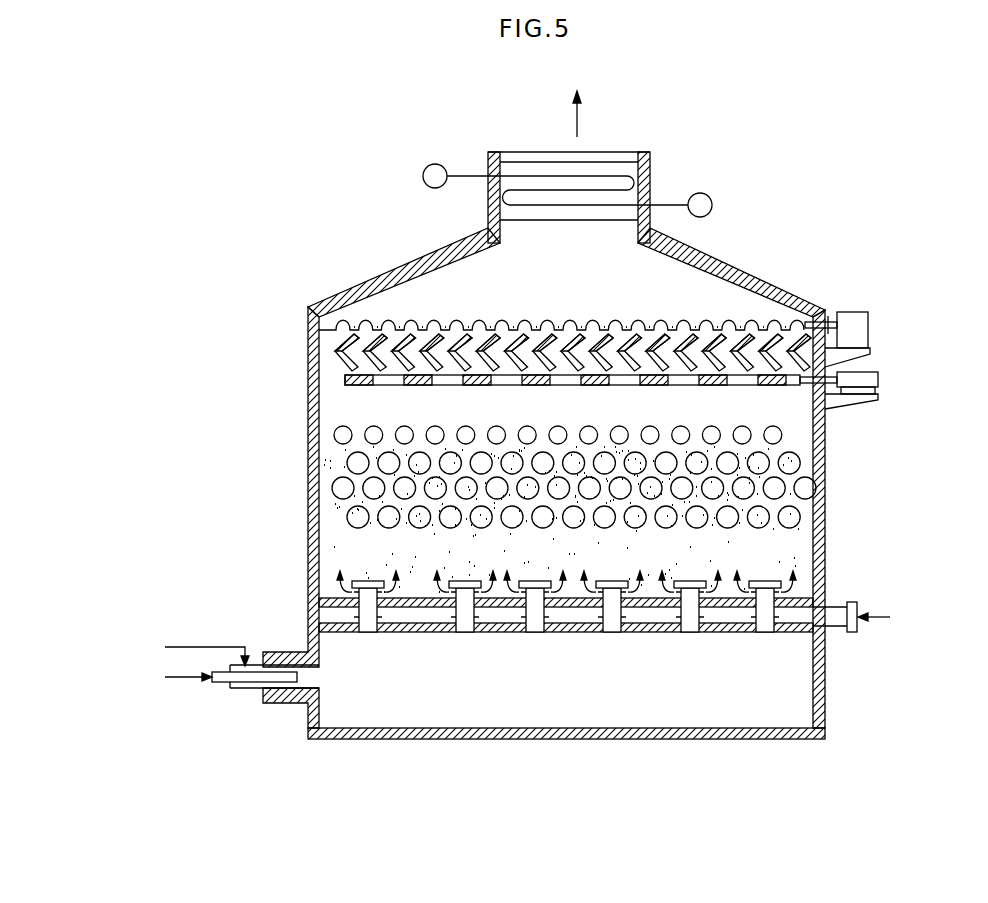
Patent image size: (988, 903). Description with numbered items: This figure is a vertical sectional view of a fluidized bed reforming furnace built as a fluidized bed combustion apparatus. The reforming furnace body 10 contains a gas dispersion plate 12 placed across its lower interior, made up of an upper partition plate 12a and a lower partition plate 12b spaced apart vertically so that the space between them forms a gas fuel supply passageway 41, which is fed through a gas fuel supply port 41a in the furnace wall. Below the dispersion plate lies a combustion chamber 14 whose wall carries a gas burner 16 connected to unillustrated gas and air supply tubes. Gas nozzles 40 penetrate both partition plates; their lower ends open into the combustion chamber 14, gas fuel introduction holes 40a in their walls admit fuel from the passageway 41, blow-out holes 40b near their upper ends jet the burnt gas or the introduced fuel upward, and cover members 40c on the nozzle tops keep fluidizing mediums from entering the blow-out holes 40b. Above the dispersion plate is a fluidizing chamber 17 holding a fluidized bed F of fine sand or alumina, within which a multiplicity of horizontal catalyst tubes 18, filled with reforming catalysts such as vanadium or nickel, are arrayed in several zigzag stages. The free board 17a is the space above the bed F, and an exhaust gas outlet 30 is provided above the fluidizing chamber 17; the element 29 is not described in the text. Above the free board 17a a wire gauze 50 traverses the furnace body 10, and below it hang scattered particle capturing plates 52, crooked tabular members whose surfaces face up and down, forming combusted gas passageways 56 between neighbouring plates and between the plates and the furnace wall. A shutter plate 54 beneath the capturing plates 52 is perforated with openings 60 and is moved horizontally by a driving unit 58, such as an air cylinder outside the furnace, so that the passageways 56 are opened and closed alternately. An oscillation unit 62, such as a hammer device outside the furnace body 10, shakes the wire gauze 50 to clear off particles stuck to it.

The reforming furnace body 10 is at (306, 357).
The gas dispersion plate 12 is at (546, 632).
The upper partition plate 12a is at (318, 594).
The lower partition plate 12b is at (337, 632).
The combustion chamber 14 is at (565, 703).
The gas burner 16 is at (219, 688).
The fluidizing chamber 17 is at (535, 362).
The free board 17a is at (318, 332).
The catalyst tube 18 is at (332, 487).
The exhaust gas outlet 29 is at (669, 205).
The exhaust gas outlet 30 is at (612, 152).
The gas nozzle 40 is at (365, 626).
The gas fuel introduction hole 40a is at (383, 614).
The blow-out hole 40b is at (602, 590).
The cover member 40c is at (521, 590).
The gas fuel supply passageway 41 is at (524, 620).
The gas fuel supply port 41a is at (838, 605).
The wire gauze 50 is at (422, 325).
The scattered particle capturing plate 52 is at (342, 366).
The shutter plate 54 is at (354, 385).
The combusted gas passageway 56 is at (524, 338).
The driving unit 58 is at (878, 372).
The opening 60 is at (401, 385).
The oscillation unit 62 is at (868, 312).
The fluidized bed F is at (797, 538).